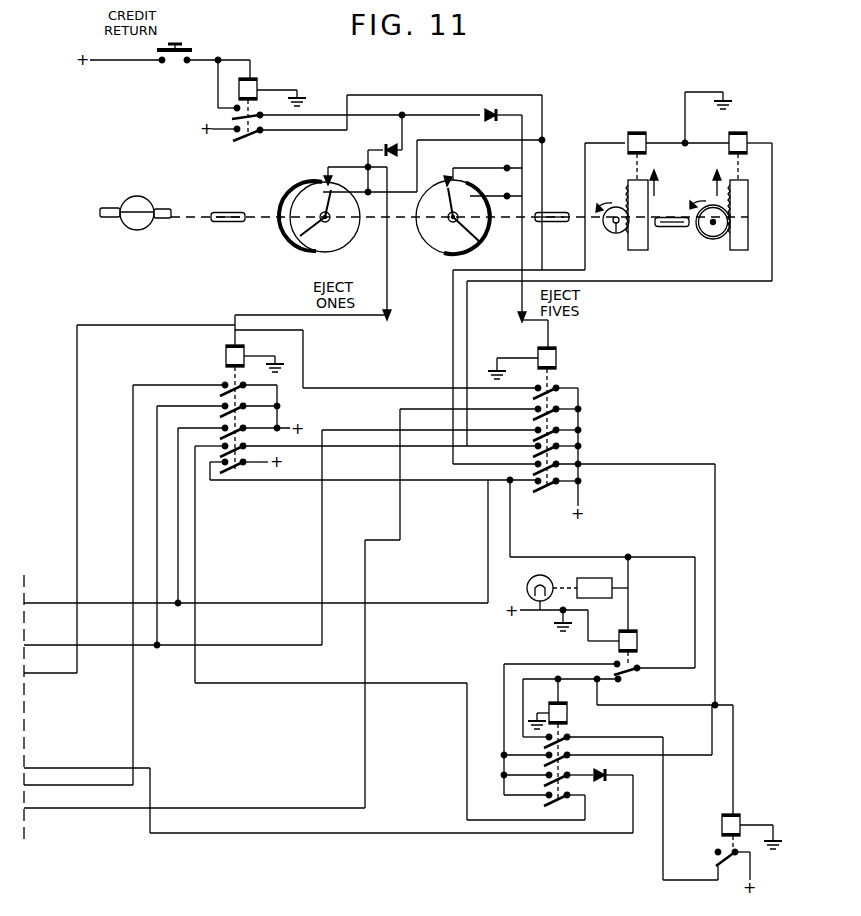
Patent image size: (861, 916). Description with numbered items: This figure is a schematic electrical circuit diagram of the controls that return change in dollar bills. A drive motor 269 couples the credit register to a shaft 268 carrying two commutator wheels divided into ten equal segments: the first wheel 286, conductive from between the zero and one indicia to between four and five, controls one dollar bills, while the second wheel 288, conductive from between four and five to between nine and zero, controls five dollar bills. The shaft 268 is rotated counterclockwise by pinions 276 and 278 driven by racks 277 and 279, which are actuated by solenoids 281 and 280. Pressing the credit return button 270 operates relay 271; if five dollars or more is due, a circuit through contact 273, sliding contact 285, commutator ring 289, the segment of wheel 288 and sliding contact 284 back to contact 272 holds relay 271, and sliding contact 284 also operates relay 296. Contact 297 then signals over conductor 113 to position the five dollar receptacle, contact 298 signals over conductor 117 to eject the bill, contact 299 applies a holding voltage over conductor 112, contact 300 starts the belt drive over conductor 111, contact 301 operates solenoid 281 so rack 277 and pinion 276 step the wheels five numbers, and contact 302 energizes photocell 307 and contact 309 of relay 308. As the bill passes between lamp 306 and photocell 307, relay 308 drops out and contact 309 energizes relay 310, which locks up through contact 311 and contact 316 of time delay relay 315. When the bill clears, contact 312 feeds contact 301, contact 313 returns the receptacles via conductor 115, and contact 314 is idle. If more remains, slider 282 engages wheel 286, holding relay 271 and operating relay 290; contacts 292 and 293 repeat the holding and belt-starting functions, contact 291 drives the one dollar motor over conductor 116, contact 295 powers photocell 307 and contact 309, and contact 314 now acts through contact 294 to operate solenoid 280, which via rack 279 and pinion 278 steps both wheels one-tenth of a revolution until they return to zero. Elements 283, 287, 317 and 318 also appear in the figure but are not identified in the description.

The conductor 111 is at (35, 603).
The conductor 112 is at (35, 645).
The conductor 113 is at (35, 673).
The conductor 115 is at (80, 768).
The conductor 116 is at (40, 787).
The conductor 117 is at (88, 805).
The shaft 268 is at (163, 180).
The drive motor 269 is at (137, 231).
The credit return button 270 is at (193, 55).
The relay 271 is at (258, 80).
The contact of relay 271 272 is at (228, 117).
The contact of relay 271 273 is at (230, 140).
The pinion 276 is at (609, 232).
The rack 277 is at (648, 251).
The pinion 278 is at (705, 238).
The rack 279 is at (744, 251).
The rack solenoid 280 is at (749, 140).
The solenoid 281 is at (626, 135).
The sliding contact 282 is at (328, 175).
The ones stepper contact segment 283 is at (312, 190).
The sliding contact 284 is at (447, 178).
The sliding contact 285 is at (474, 185).
The first wheel 286 is at (318, 250).
The ones stepper wiper arm 287 is at (331, 250).
The second wheel 288 is at (430, 246).
The commutator ring 289 is at (470, 252).
The relay 290 is at (226, 358).
The contact of relay 290 291 is at (222, 394).
The contact of relay 290 292 is at (222, 415).
The contact of relay 290 293 is at (222, 437).
The contact of relay 290 294 is at (238, 452).
The contact of relay 290 295 is at (226, 472).
The relay 296 is at (557, 360).
The contact of relay 296 297 is at (550, 390).
The contact of relay 296 298 is at (534, 415).
The contact of relay 296 299 is at (534, 436).
The contact of relay 296 300 is at (534, 452).
The contact of relay 296 301 is at (534, 470).
The contact of relay 296 302 is at (529, 490).
The lamp 306 is at (531, 578).
The photocell 307 is at (594, 578).
The relay 308 is at (638, 636).
The contact of relay 308 309 is at (630, 673).
The relay 310 is at (569, 718).
The contact of relay 310 311 is at (546, 743).
The contact of relay 310 312 is at (546, 762).
The contact of relay 310 313 is at (546, 782).
The contact of relay 310 314 is at (546, 800).
The time delay relay 315 is at (740, 814).
The contact of time delay relay 315 316 is at (714, 857).
The diode 317 is at (390, 143).
The diode 318 is at (494, 122).